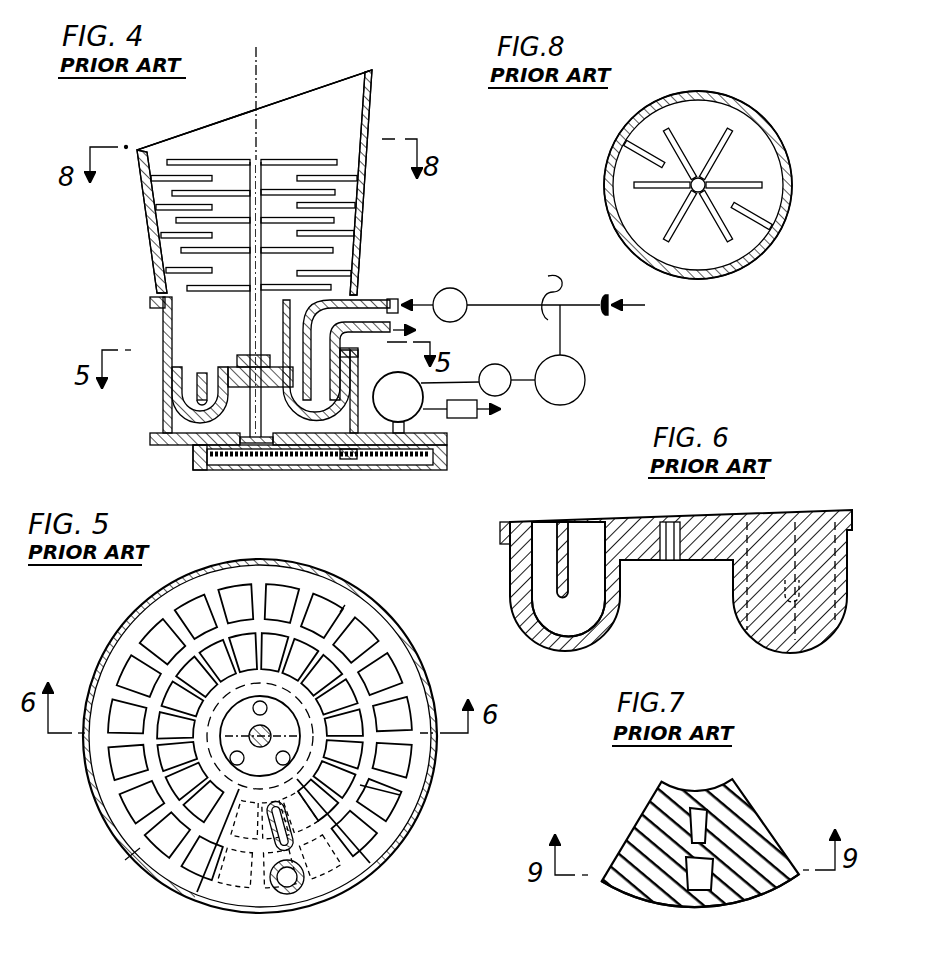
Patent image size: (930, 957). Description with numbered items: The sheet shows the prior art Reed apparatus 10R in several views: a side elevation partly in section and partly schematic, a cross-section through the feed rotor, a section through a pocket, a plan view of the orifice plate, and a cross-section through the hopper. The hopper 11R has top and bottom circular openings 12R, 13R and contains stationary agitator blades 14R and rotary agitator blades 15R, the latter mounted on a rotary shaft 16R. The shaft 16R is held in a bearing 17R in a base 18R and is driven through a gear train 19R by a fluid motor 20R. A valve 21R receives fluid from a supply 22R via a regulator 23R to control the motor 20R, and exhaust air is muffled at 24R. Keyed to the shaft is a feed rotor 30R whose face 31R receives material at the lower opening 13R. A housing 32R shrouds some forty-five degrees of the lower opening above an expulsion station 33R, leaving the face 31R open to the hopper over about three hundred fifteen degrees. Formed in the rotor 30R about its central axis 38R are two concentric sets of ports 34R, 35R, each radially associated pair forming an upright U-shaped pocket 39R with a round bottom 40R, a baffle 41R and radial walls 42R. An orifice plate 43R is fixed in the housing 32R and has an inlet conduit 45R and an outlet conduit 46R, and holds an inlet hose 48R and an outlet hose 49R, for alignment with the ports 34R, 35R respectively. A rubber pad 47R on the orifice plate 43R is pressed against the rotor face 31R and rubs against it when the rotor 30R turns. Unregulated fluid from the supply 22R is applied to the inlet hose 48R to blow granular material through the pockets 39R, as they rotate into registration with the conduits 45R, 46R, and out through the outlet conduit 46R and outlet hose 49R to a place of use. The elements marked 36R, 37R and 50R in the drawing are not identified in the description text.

In FIG. 4, the apparatus 10R is at (128, 272).
In FIG. 4, the hopper 11R is at (360, 200).
In FIG. 8, the hopper 11R is at (606, 200).
In FIG. 4, the top circular opening 12R is at (322, 85).
In FIG. 4, the bottom circular opening 13R is at (175, 332).
In FIG. 4, the stationary agitator blades 14R is at (362, 175).
In FIG. 8, the stationary agitator blades 14R is at (780, 255).
In FIG. 4, the rotary agitator blades 15R is at (190, 160).
In FIG. 8, the rotary agitator blades 15R is at (760, 218).
In FIG. 4, the rotary shaft 16R is at (262, 180).
In FIG. 8, the rotary shaft 16R is at (705, 180).
In FIG. 4, the bearing 17R is at (310, 462).
In FIG. 4, the base 18R is at (222, 470).
In FIG. 4, the gear train 19R is at (320, 464).
In FIG. 4, the fluid motor 20R is at (415, 420).
In FIG. 4, the valve 21R is at (505, 395).
In FIG. 4, the supply 22R is at (575, 294).
In FIG. 4, the regulator 23R is at (583, 372).
In FIG. 4, the muffler 24R is at (477, 418).
In FIG. 4, the feed rotor 30R is at (162, 408).
In FIG. 5, the feed rotor 30R is at (130, 612).
In FIG. 6, the feed rotor 30R is at (780, 652).
In FIG. 4, the rotor face 31R is at (180, 358).
In FIG. 5, the rotor face 31R is at (345, 605).
In FIG. 6, the rotor face 31R is at (678, 510).
In FIG. 4, the housing 32R is at (250, 312).
In FIG. 4, the expulsion station 33R is at (360, 346).
In FIG. 5, the ports 34R is at (318, 676).
In FIG. 5, the ports 35R is at (385, 640).
In FIG. 5, the hub 36R is at (105, 755).
In FIG. 5, the hub holes 37R is at (115, 800).
In FIG. 4, the central axis 38R is at (250, 75).
In FIG. 4, the U-shaped pocket 39R is at (178, 438).
In FIG. 6, the U-shaped pocket 39R is at (585, 604).
In FIG. 6, the round bottom 40R is at (590, 622).
In FIG. 5, the baffle 41R is at (110, 790).
In FIG. 6, the baffle 41R is at (512, 598).
In FIG. 5, the radial walls 42R is at (130, 865).
In FIG. 6, the radial walls 42R is at (808, 530).
In FIG. 5, the orifice plate 43R is at (355, 892).
In FIG. 7, the orifice plate 43R is at (760, 818).
In FIG. 7, the inlet conduit 45R is at (700, 817).
In FIG. 7, the outlet conduit 46R is at (702, 870).
In FIG. 4, the rubber pad 47R is at (272, 352).
In FIG. 7, the rubber pad 47R is at (772, 876).
In FIG. 4, the inlet hose 48R is at (395, 298).
In FIG. 5, the inlet hose 48R is at (265, 835).
In FIG. 4, the outlet hose 49R is at (415, 333).
In FIG. 5, the outlet hose 49R is at (300, 892).
In FIG. 4, the valve 50R is at (455, 290).